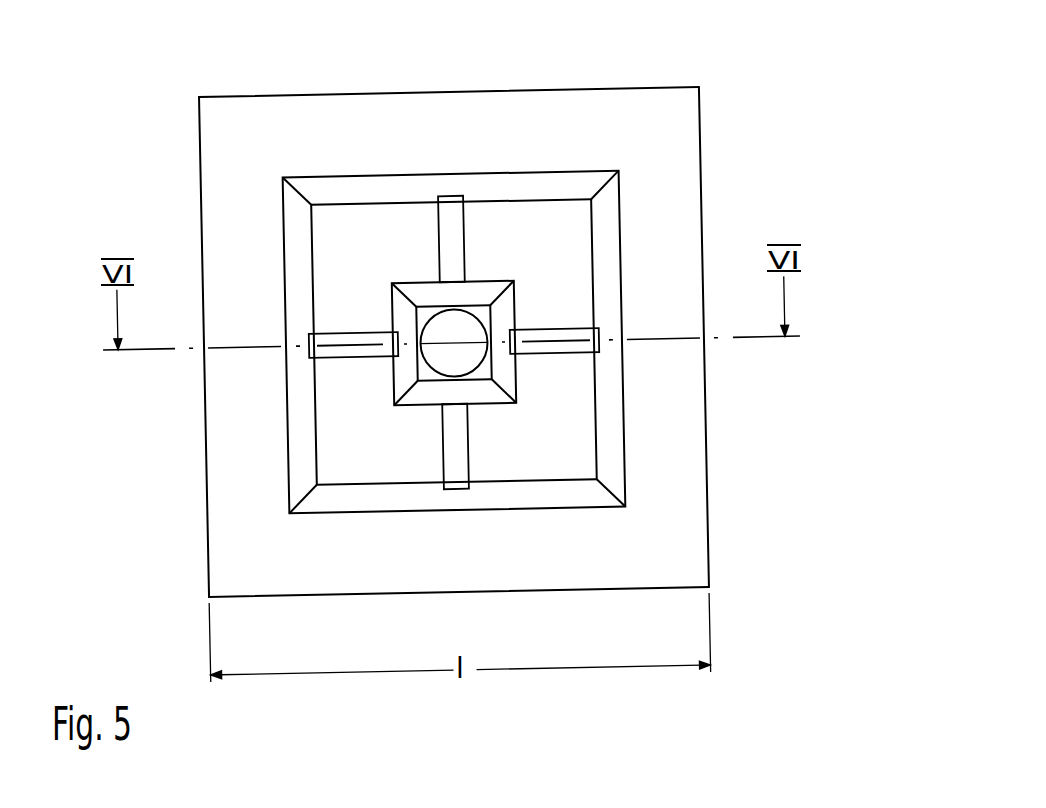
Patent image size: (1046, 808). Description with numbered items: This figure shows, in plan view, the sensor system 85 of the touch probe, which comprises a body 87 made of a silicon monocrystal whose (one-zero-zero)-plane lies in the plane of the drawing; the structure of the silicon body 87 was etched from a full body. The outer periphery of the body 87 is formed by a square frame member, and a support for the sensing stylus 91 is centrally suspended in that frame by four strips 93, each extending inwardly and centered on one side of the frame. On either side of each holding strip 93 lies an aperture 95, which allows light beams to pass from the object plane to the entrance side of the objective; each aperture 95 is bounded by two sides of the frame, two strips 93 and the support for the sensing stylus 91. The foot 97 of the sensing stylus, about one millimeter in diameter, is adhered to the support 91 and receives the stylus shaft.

The sensor system 85 is at (756, 162).
The body 87 is at (656, 84).
The support for the sensing stylus 91 is at (414, 282).
The strips 93 is at (465, 211).
The aperture 95 is at (351, 297).
The foot 97 is at (468, 311).